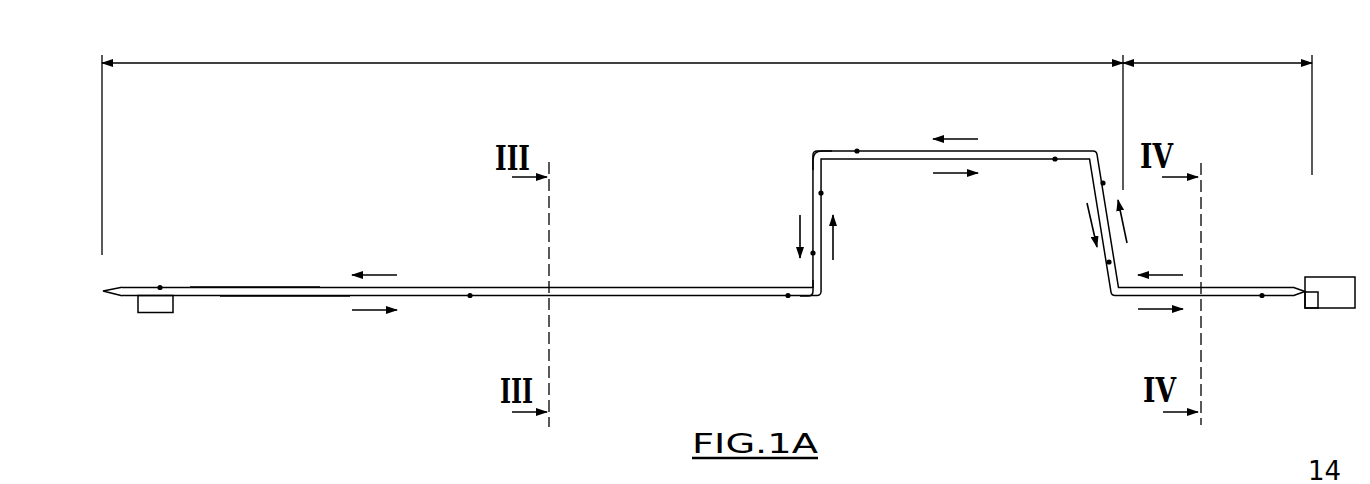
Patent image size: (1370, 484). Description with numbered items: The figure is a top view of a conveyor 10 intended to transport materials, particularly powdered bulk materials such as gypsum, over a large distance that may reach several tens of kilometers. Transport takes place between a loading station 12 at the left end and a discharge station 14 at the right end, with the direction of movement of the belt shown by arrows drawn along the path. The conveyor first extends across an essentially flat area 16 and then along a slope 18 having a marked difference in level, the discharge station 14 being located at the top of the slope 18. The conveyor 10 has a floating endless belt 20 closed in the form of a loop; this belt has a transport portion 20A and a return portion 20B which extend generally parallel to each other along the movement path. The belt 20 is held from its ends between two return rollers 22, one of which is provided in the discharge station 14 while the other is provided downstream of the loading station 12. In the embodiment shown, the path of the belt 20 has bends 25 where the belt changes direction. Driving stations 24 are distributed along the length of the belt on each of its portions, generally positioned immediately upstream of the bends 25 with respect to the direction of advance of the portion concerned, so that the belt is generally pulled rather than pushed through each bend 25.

The conveyor 10 is at (667, 198).
The loading station 12 is at (150, 316).
The discharge station 14 is at (1326, 273).
The essentially flat area 16 is at (612, 145).
The slope 18 is at (1217, 105).
The floating endless belt 20 is at (623, 288).
The transport portion 20A is at (268, 296).
The return portion 20B is at (237, 287).
The return roller 22 is at (103, 288).
The driving station 24 is at (161, 284).
The bend 25 is at (808, 147).